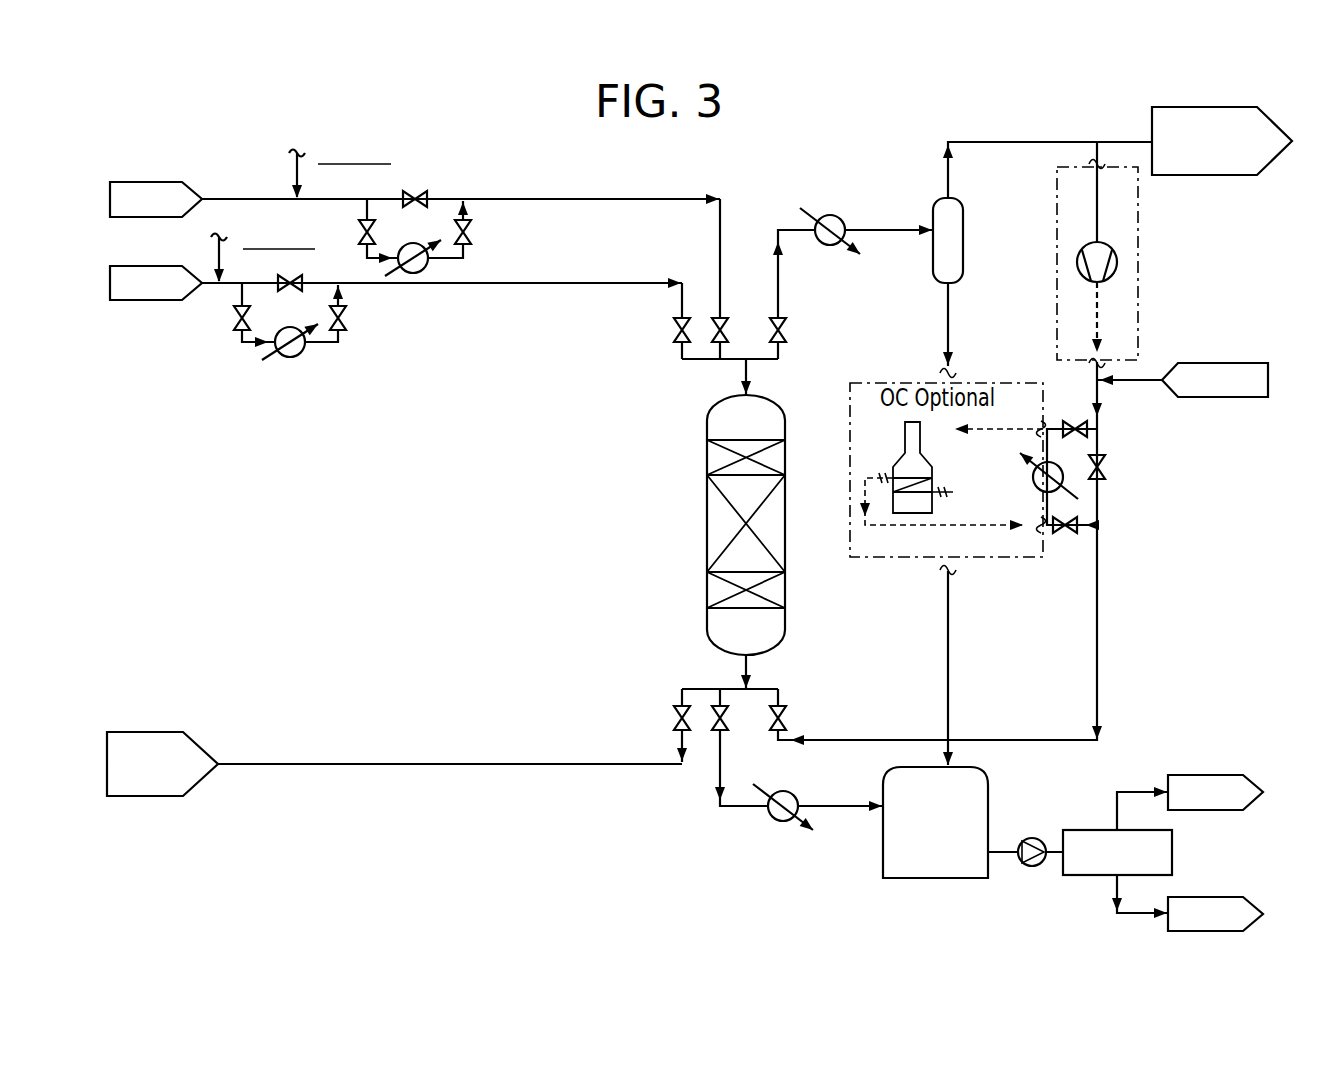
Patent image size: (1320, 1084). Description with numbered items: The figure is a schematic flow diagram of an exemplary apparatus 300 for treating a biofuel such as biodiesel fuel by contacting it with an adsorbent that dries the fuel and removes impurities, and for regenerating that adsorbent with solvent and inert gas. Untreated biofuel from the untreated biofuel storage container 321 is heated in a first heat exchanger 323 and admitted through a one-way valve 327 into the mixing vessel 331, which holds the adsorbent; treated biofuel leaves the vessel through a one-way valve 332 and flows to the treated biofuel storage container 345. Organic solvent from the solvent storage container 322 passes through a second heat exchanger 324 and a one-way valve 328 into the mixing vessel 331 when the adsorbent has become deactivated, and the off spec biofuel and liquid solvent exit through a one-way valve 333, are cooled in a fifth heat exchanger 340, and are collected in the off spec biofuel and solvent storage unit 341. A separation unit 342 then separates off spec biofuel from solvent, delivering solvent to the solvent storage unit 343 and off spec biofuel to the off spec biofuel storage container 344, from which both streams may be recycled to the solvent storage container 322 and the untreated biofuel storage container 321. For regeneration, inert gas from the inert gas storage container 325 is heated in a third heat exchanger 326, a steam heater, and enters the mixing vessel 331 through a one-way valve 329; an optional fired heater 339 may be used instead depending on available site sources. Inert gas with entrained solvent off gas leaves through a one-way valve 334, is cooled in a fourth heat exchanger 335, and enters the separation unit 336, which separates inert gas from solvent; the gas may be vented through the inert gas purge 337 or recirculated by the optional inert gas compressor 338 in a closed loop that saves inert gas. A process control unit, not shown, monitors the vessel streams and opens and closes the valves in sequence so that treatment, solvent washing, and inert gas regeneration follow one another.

The apparatus 300 is at (190, 152).
The untreated biofuel storage container 321 is at (155, 301).
The solvent storage container 322 is at (155, 218).
The first heat exchanger 323 is at (306, 345).
The second heat exchanger 324 is at (429, 262).
The inert gas storage container 325 is at (1197, 398).
The third heat exchanger 326 is at (1063, 478).
The one-way valve 327 is at (676, 322).
The one-way valve 328 is at (727, 318).
The one-way valve 329 is at (786, 723).
The mixing vessel 331 is at (708, 419).
The one-way valve 332 is at (678, 714).
The one-way valve 333 is at (711, 690).
The one-way valve 334 is at (786, 333).
The fourth heat exchanger 335 is at (845, 222).
The separation unit 336 is at (965, 212).
The inert gas purge 337 is at (1151, 125).
The inert gas compressor 338 is at (1138, 283).
The fired heater 339 is at (934, 506).
The fifth heat exchanger 340 is at (799, 795).
The off spec biofuel and solvent storage unit 341 is at (990, 797).
The separation unit 342 is at (1082, 828).
The solvent storage unit 343 is at (1195, 774).
The off spec biofuel storage container 344 is at (1195, 896).
The treated biofuel storage container 345 is at (125, 730).